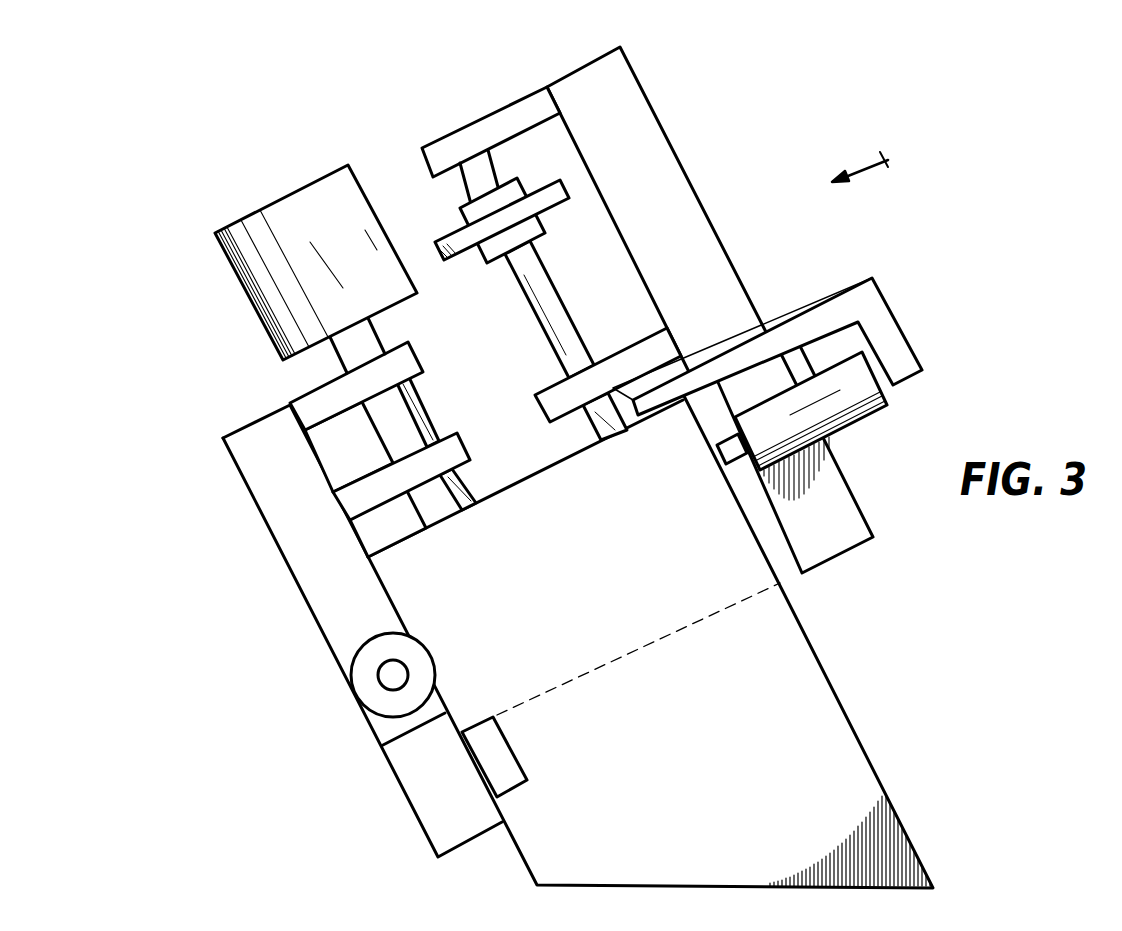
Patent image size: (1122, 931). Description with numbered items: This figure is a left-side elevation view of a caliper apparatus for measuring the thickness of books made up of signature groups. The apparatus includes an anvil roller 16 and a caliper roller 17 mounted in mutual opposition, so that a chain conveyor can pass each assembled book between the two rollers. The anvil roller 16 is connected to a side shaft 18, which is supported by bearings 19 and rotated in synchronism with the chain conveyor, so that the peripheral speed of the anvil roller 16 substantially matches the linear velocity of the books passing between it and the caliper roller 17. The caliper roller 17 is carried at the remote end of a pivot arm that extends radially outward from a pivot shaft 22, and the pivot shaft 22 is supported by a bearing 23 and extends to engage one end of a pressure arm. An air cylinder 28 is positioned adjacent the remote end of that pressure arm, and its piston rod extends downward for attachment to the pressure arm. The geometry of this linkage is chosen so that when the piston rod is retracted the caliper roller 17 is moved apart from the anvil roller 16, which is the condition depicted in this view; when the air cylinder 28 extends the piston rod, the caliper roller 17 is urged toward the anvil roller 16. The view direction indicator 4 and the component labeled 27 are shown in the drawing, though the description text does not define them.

The section view direction arrow 4 is at (869, 164).
The anvil roller 16 is at (356, 178).
The caliper roller 17 is at (461, 258).
The side shaft 18 is at (412, 410).
The bearings 19 is at (327, 420).
The pivot shaft 22 is at (544, 266).
The bearing 23 is at (625, 349).
The bracket 27 is at (890, 307).
The air cylinder 28 is at (857, 421).